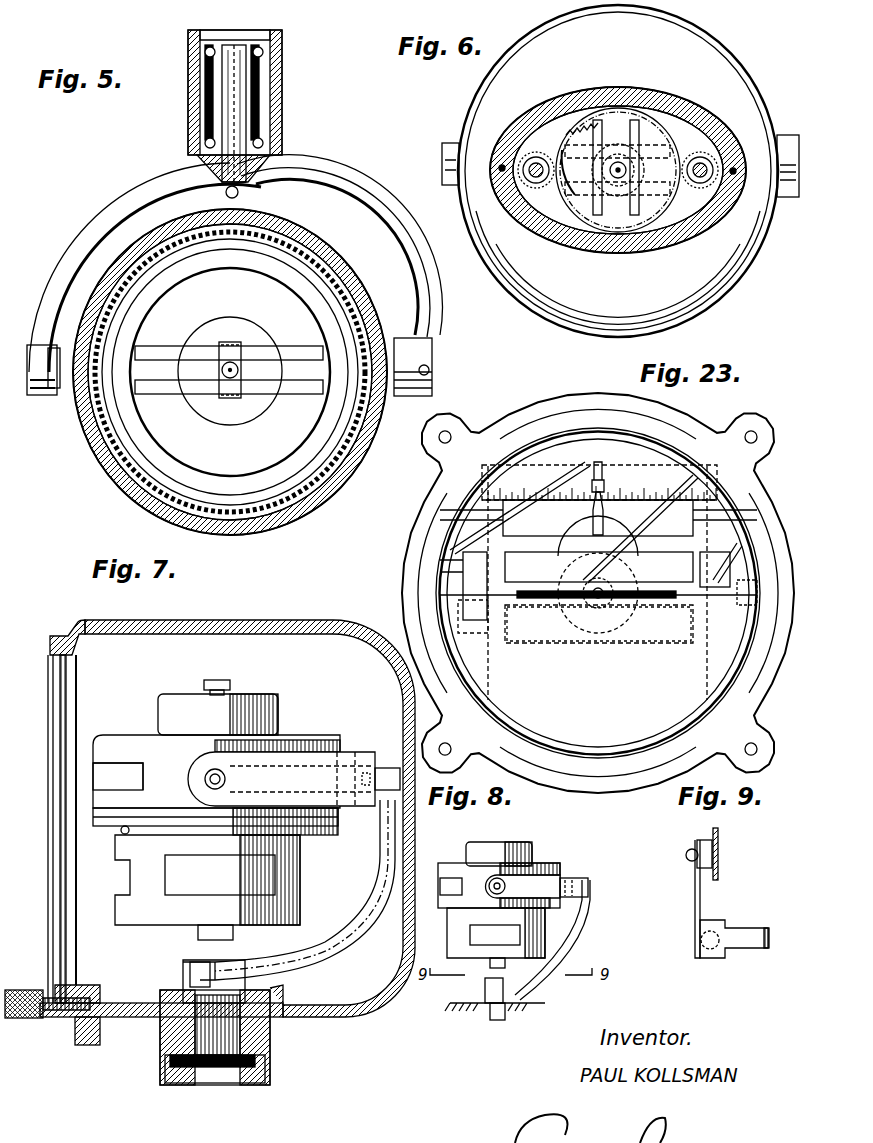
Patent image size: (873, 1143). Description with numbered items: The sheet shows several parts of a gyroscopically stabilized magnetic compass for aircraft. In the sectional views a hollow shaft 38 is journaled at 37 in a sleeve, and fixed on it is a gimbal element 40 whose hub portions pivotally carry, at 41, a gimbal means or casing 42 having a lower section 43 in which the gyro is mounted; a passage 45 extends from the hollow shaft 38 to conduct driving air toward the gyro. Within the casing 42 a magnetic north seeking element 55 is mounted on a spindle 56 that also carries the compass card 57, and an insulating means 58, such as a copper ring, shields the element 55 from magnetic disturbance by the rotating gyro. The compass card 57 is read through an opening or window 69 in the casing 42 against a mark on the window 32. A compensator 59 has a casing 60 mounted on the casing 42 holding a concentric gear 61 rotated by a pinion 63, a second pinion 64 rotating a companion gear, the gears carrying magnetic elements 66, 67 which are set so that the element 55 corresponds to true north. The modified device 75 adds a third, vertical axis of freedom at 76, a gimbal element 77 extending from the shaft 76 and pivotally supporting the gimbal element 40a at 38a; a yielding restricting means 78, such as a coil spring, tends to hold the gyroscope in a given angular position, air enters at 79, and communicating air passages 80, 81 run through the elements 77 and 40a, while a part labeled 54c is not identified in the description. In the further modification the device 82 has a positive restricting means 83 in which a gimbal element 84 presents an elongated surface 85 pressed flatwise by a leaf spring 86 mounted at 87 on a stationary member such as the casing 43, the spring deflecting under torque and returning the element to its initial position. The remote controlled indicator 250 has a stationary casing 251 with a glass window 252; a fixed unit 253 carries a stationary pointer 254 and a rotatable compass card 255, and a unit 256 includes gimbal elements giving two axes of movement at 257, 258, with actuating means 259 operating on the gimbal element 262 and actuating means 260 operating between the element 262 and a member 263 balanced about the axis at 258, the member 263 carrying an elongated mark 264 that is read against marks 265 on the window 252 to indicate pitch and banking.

In FIG. 7, the window 32 is at (60, 752).
In FIG. 5, the journal 37 is at (276, 72).
In FIG. 5, the hollow shaft 38 is at (250, 110).
In FIG. 7, the pivot 38a is at (401, 780).
In FIG. 5, the gimbal element 40 is at (110, 203).
In FIG. 7, the gimbal element 40a is at (318, 770).
In FIG. 5, the journal 41 is at (52, 398).
In FIG. 5, the gimbal casing 42 is at (95, 450).
In FIG. 6, the gimbal casing 42 is at (733, 62).
In FIG. 7, the gimbal casing 42 is at (216, 784).
In FIG. 7, the lower section 43 is at (142, 890).
In FIG. 5, the passage 45 is at (328, 190).
In FIG. 7, the bottom plate 54c is at (105, 995).
In FIG. 5, the magnetic north seeking element 55 is at (153, 378).
In FIG. 5, the spindle 56 is at (229, 380).
In FIG. 5, the compass card 57 is at (125, 495).
In FIG. 5, the insulating means 58 is at (312, 417).
In FIG. 7, the compensator 59 is at (274, 705).
In FIG. 6, the compensator casing 60 is at (698, 232).
In FIG. 6, the concentric gear 61 is at (585, 108).
In FIG. 6, the pinion 63 is at (537, 156).
In FIG. 6, the pinion 64 is at (700, 156).
In FIG. 6, the magnetic element 66 is at (635, 215).
In FIG. 6, the magnetic element 67 is at (575, 196).
In FIG. 5, the window 69 is at (163, 510).
In FIG. 7, the window 69 is at (112, 760).
In FIG. 7, the modified device 75 is at (78, 620).
In FIG. 7, the vertical shaft 76 is at (262, 1040).
In FIG. 7, the gimbal element 77 is at (343, 938).
In FIG. 7, the restricting means 78 is at (300, 995).
In FIG. 7, the air inlet 79 is at (180, 1038).
In FIG. 7, the air passage 80 is at (368, 895).
In FIG. 7, the air passage 81 is at (352, 775).
In FIG. 8, the device 82 is at (545, 856).
In FIG. 8, the restricting means 83 is at (470, 990).
In FIG. 9, the restricting means 83 is at (690, 878).
In FIG. 8, the gimbal element 84 is at (588, 912).
In FIG. 9, the gimbal element 84 is at (746, 938).
In FIG. 9, the elongated surface 85 is at (705, 962).
In FIG. 9, the leaf spring 86 is at (694, 900).
In FIG. 9, the spring mounting 87 is at (720, 850).
In FIG. 23, the remote controlled indicator 250 is at (499, 410).
In FIG. 23, the stationary casing 251 is at (676, 418).
In FIG. 23, the glass window 252 is at (750, 530).
In FIG. 23, the fixed unit 253 is at (505, 520).
In FIG. 23, the stationary pointer 254 is at (604, 520).
In FIG. 23, the compass card 255 is at (560, 502).
In FIG. 23, the unit 256 is at (698, 570).
In FIG. 23, the axis 257 is at (704, 578).
In FIG. 23, the axis 258 is at (598, 602).
In FIG. 23, the actuating means 259 is at (476, 640).
In FIG. 23, the actuating means 260 is at (568, 628).
In FIG. 23, the gimbal element 262 is at (522, 603).
In FIG. 23, the member 263 is at (648, 645).
In FIG. 23, the elongated mark 264 is at (645, 600).
In FIG. 23, the marks 265 is at (468, 590).